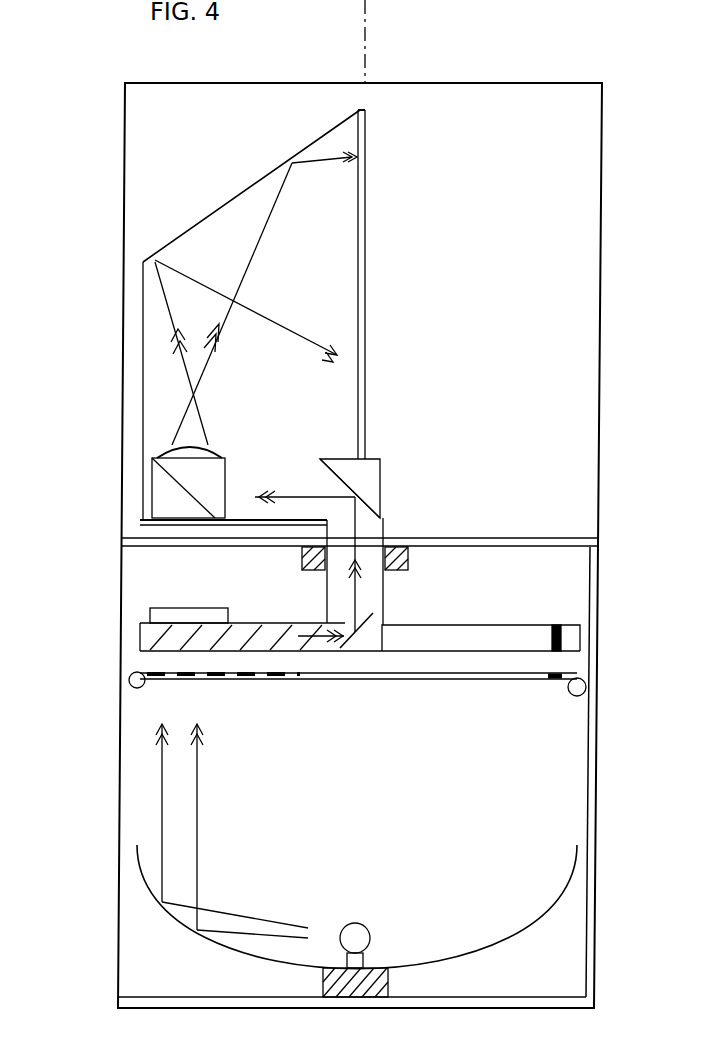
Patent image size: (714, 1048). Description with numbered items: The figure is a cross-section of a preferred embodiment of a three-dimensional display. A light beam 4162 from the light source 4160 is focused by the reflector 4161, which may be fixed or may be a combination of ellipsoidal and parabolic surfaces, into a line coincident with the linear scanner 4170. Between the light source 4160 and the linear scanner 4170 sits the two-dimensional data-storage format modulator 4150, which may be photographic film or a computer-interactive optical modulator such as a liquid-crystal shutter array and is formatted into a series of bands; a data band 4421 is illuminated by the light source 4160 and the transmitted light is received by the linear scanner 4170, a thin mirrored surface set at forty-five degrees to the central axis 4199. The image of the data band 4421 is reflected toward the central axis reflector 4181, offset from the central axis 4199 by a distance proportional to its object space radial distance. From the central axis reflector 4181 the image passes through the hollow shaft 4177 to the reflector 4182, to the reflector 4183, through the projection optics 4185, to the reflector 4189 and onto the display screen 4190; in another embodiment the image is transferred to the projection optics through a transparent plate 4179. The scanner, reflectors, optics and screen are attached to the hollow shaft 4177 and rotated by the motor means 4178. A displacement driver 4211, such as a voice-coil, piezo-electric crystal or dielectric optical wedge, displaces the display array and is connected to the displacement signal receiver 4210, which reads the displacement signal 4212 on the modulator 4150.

The central axis 4199 is at (378, 38).
The display screen 4190 is at (375, 175).
The reflector 4189 is at (268, 168).
The projection optics 4185 is at (214, 440).
The reflector 4183 is at (165, 490).
The reflector 4182 is at (348, 453).
The displacement driver 4211 is at (385, 492).
The transparent plate 4179 is at (162, 550).
The motor means 4178 is at (413, 557).
The hollow shaft 4177 is at (325, 595).
The linear scanner 4170 is at (135, 637).
The central axis reflector 4181 is at (363, 636).
The displacement signal receiver 4210 is at (538, 642).
The displacement signal 4212 is at (566, 697).
The two-dimensional data-storage format modulator 4150 is at (133, 690).
The data band 4421 is at (220, 686).
The light beam 4162 is at (202, 853).
The light source 4160 is at (355, 920).
The reflector 4161 is at (565, 872).